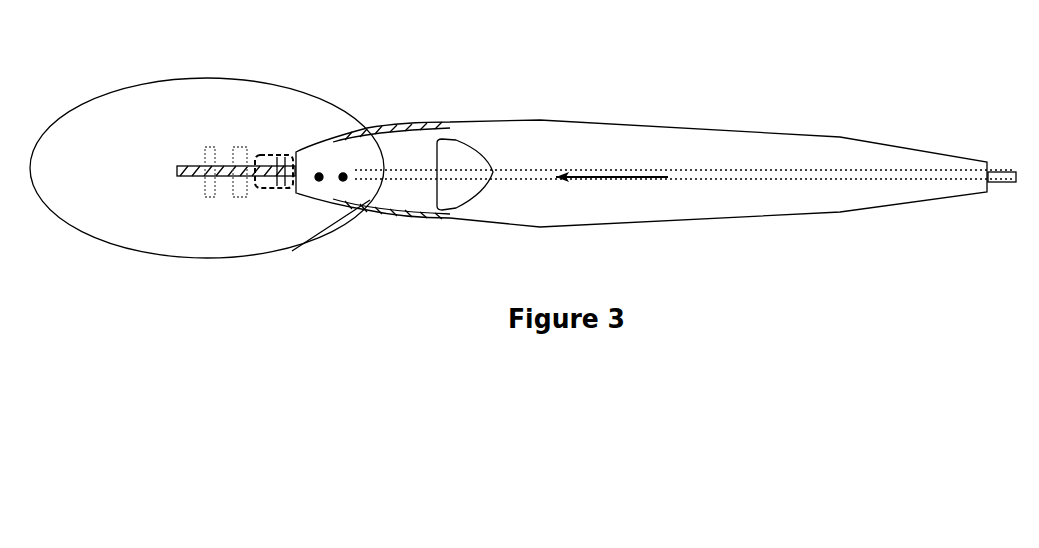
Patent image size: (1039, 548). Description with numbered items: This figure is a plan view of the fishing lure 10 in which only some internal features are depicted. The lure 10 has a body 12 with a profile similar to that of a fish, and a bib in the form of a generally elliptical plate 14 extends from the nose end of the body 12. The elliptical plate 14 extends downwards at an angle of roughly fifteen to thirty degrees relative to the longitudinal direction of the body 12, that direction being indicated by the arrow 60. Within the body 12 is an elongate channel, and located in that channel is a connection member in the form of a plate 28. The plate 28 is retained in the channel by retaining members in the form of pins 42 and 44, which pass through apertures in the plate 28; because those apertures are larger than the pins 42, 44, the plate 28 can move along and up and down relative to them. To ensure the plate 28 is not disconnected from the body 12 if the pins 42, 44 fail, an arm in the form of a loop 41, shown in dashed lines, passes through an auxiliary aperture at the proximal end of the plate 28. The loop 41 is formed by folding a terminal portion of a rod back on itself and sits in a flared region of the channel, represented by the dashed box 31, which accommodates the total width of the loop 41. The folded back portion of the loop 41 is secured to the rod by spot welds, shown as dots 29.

The fishing lure 10 is at (463, 257).
The body 12 is at (717, 115).
The elliptical plate 14 is at (118, 182).
The plate 28 is at (196, 161).
The dots 29 is at (319, 164).
The dashed box 31 is at (288, 197).
The loop 41 is at (276, 191).
The pin 42 is at (238, 139).
The pin 44 is at (208, 201).
The arrow 60 is at (633, 178).